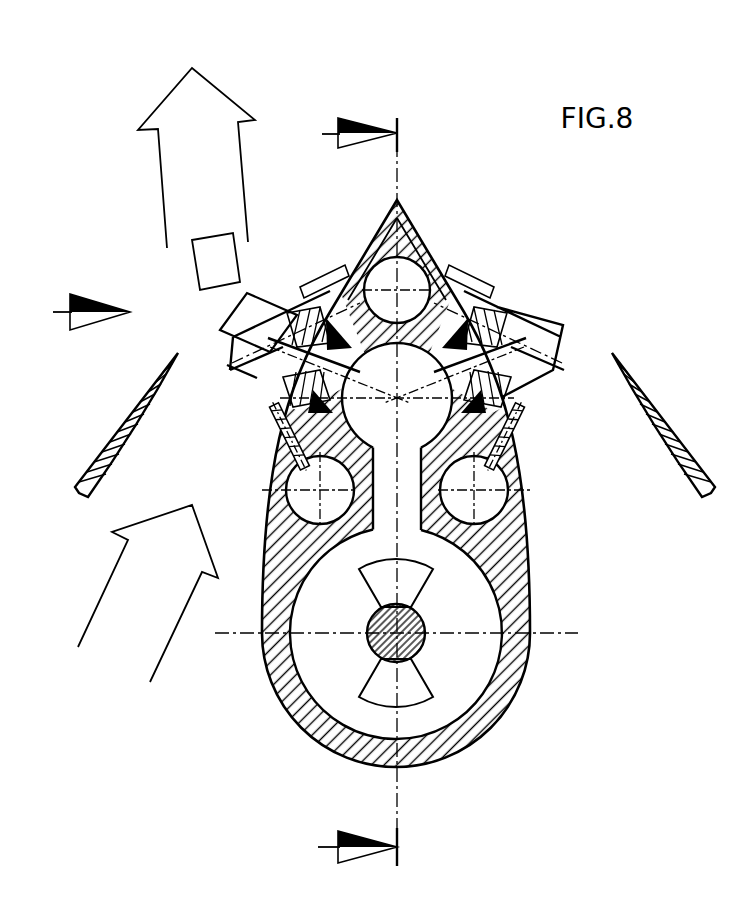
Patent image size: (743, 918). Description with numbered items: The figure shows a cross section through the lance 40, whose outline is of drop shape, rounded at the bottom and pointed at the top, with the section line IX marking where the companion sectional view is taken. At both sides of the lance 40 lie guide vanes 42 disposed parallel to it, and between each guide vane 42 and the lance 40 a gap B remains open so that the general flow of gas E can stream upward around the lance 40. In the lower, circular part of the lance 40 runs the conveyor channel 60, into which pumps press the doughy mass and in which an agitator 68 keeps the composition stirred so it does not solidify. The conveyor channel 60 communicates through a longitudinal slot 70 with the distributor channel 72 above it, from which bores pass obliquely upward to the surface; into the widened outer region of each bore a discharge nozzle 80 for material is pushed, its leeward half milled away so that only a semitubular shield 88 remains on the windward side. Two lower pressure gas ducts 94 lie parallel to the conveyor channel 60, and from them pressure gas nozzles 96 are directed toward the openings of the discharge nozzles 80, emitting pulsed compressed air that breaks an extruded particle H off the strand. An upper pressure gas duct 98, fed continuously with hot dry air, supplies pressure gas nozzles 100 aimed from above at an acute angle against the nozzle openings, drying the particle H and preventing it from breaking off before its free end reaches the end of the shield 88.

The lance 40 is at (545, 570).
The guide vane 42 is at (130, 408).
The conveyor channel 60 is at (488, 660).
The agitator 68 is at (440, 667).
The longitudinal slot 70 is at (407, 517).
The distributor channel 72 is at (453, 308).
The discharge nozzle for material 80 is at (291, 306).
The semitubular shield 88 is at (262, 374).
The lower pressure gas duct 94 is at (300, 497).
The pressure gas nozzle 96 is at (282, 433).
The upper pressure gas duct 98 is at (408, 250).
The pressure gas nozzle 100 is at (352, 258).
The general flow of gas E is at (160, 168).
The extruded particle H is at (212, 244).
The gap B is at (205, 360).
The section line IX is at (251, 491).